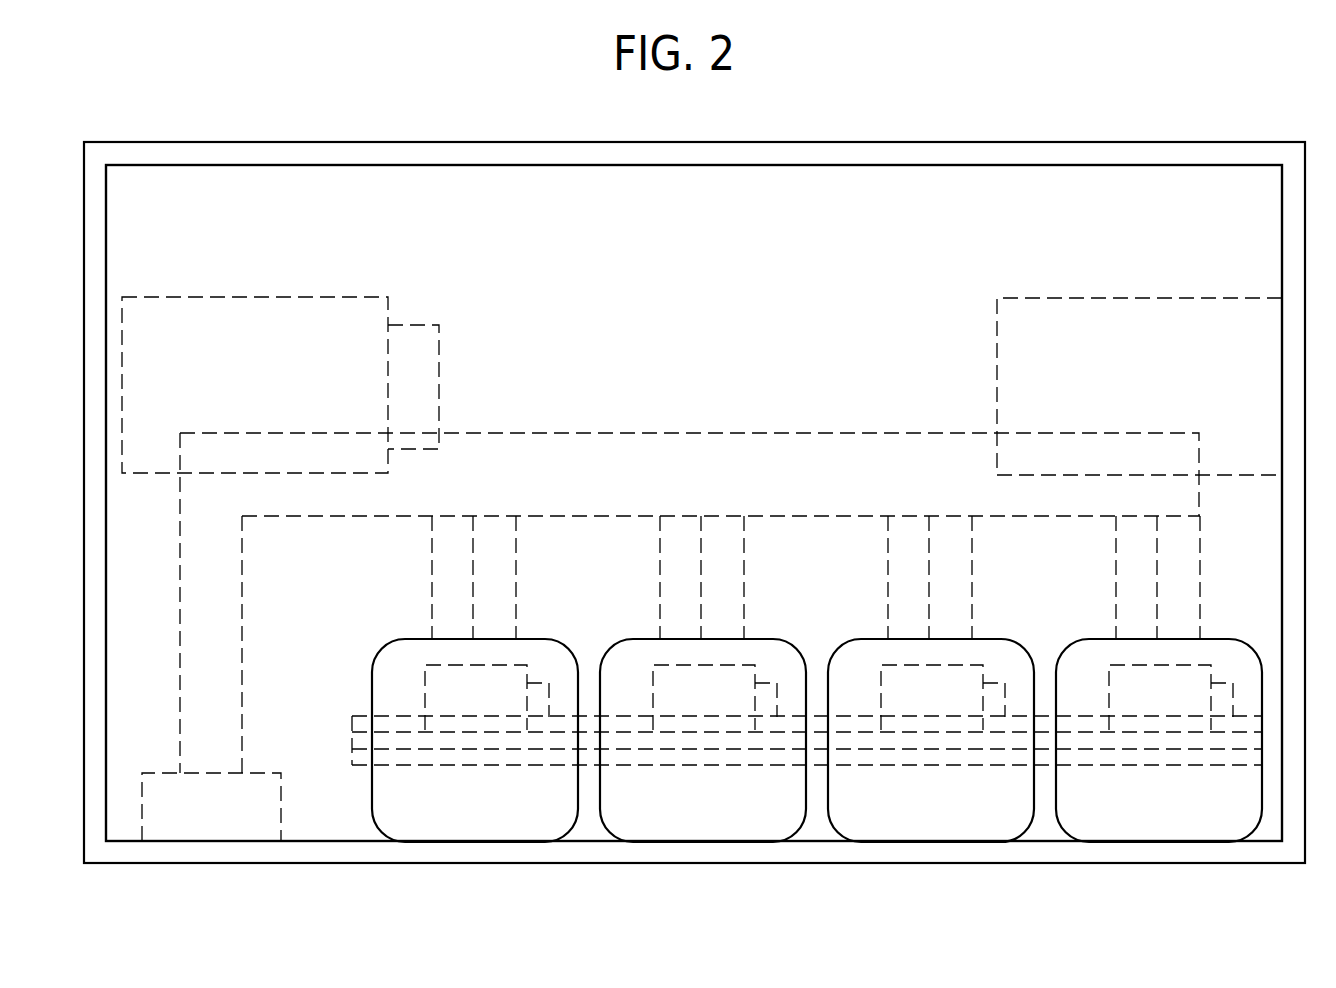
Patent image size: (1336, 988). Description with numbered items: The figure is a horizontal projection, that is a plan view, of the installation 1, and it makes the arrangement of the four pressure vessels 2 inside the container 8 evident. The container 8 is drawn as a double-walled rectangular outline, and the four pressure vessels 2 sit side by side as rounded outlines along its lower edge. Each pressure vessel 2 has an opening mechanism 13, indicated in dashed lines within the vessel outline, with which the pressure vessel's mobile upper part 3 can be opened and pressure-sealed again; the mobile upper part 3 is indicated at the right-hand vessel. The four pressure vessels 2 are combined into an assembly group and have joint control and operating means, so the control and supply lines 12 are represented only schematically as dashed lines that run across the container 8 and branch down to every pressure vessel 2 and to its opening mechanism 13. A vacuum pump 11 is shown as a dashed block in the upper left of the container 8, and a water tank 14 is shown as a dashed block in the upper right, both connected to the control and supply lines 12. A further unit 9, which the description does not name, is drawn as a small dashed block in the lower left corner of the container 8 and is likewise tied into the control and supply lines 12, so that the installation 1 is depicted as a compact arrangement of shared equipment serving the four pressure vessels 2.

The apparatus 1 is at (872, 132).
The pressure vessel 2 is at (473, 812).
The mobile upper part 3 is at (1243, 792).
The container 8 is at (1100, 160).
The power supply unit 9 is at (237, 820).
The vacuum pump 11 is at (283, 330).
The control and supply lines 12 is at (654, 458).
The opening mechanism 13 is at (644, 664).
The water tank 14 is at (1086, 328).